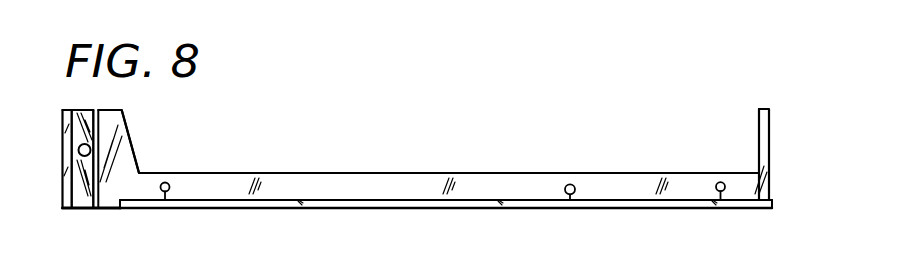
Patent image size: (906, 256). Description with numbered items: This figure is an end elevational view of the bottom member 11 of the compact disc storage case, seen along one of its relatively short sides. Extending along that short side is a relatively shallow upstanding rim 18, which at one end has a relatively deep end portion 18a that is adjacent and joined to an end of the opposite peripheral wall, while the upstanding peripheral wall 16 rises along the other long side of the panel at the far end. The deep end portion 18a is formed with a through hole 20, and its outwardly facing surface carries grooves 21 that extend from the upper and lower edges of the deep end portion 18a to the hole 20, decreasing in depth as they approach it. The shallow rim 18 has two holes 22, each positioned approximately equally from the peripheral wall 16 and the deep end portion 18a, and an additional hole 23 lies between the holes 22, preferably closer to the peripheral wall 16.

The bottom member 11 is at (476, 148).
The peripheral wall 16 is at (764, 148).
The rim 18 is at (600, 184).
The end portion 18a is at (123, 161).
The through hole 20 is at (78, 151).
The groove 21 is at (93, 110).
The hole 22 is at (165, 208).
The additional hole 23 is at (570, 208).